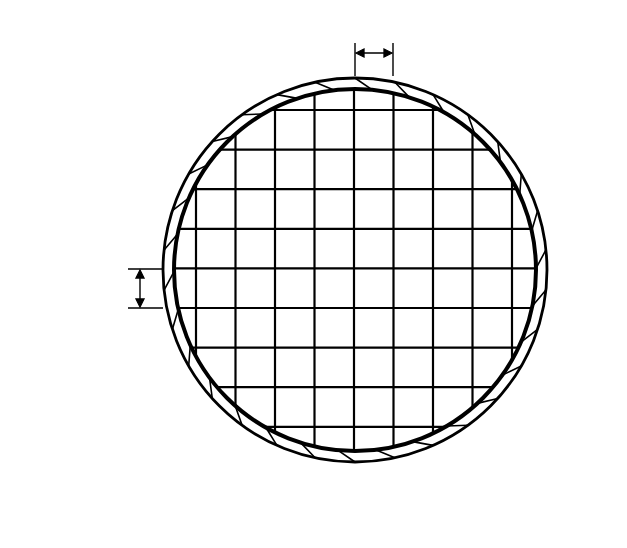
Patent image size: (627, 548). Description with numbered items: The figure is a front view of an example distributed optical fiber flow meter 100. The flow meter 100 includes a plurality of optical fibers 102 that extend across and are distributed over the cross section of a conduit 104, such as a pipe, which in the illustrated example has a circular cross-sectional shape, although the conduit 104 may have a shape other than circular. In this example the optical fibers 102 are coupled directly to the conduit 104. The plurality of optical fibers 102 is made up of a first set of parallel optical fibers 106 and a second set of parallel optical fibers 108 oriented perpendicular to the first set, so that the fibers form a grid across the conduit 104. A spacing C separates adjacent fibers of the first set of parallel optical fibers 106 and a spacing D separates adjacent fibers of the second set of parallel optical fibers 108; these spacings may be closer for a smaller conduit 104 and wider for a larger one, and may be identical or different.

The flow meter 100 is at (141, 80).
The optical fibers 102 is at (300, 107).
The conduit 104 is at (196, 383).
The first set of parallel optical fibers 106 is at (451, 148).
The second set of parallel optical fibers 108 is at (473, 252).